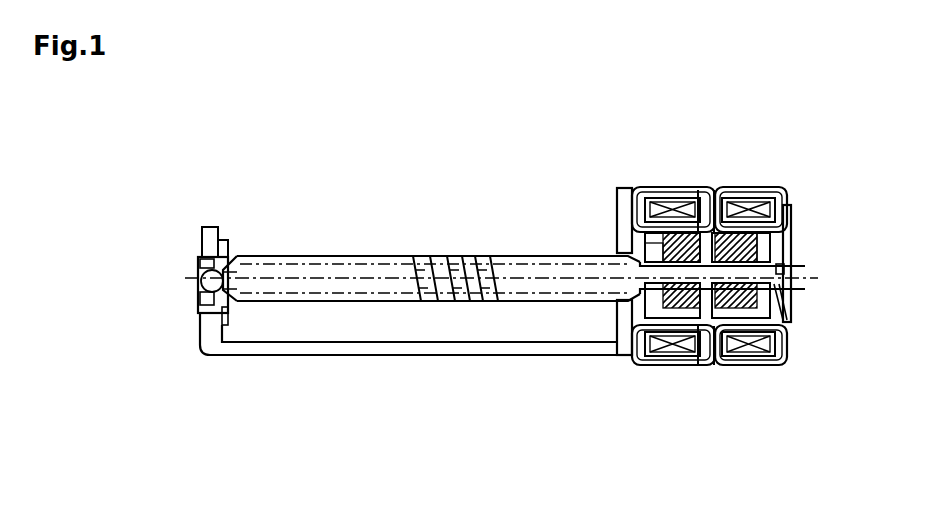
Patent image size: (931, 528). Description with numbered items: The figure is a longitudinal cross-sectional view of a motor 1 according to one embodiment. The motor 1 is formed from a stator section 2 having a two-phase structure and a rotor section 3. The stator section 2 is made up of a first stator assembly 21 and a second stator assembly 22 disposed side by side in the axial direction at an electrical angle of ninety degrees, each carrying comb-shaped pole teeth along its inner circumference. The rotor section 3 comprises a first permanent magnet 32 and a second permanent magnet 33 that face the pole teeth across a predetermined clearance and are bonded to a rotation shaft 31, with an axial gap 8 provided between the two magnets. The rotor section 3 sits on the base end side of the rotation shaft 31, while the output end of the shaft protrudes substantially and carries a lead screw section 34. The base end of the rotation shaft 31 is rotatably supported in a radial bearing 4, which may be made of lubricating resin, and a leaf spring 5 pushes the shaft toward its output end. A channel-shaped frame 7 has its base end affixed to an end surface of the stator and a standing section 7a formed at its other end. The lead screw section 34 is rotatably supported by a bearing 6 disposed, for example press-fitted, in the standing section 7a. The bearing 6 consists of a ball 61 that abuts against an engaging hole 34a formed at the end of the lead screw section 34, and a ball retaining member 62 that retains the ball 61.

The motor 1 is at (445, 196).
The stator section 2 is at (750, 140).
The first stator assembly 21 is at (675, 186).
The second stator assembly 22 is at (746, 186).
The rotor section 3 is at (693, 434).
The rotation shaft 31 is at (650, 268).
The first permanent magnet 32 is at (673, 366).
The second permanent magnet 33 is at (752, 366).
The lead screw section 34 is at (518, 255).
The engaging hole 34a is at (240, 272).
The radial bearing 4 is at (787, 237).
The leaf spring 5 is at (787, 296).
The bearing 6 is at (192, 320).
The ball 61 is at (198, 296).
The ball retaining member 62 is at (197, 265).
The frame 7 is at (372, 357).
The standing section 7a is at (202, 233).
The gap 8 is at (706, 300).